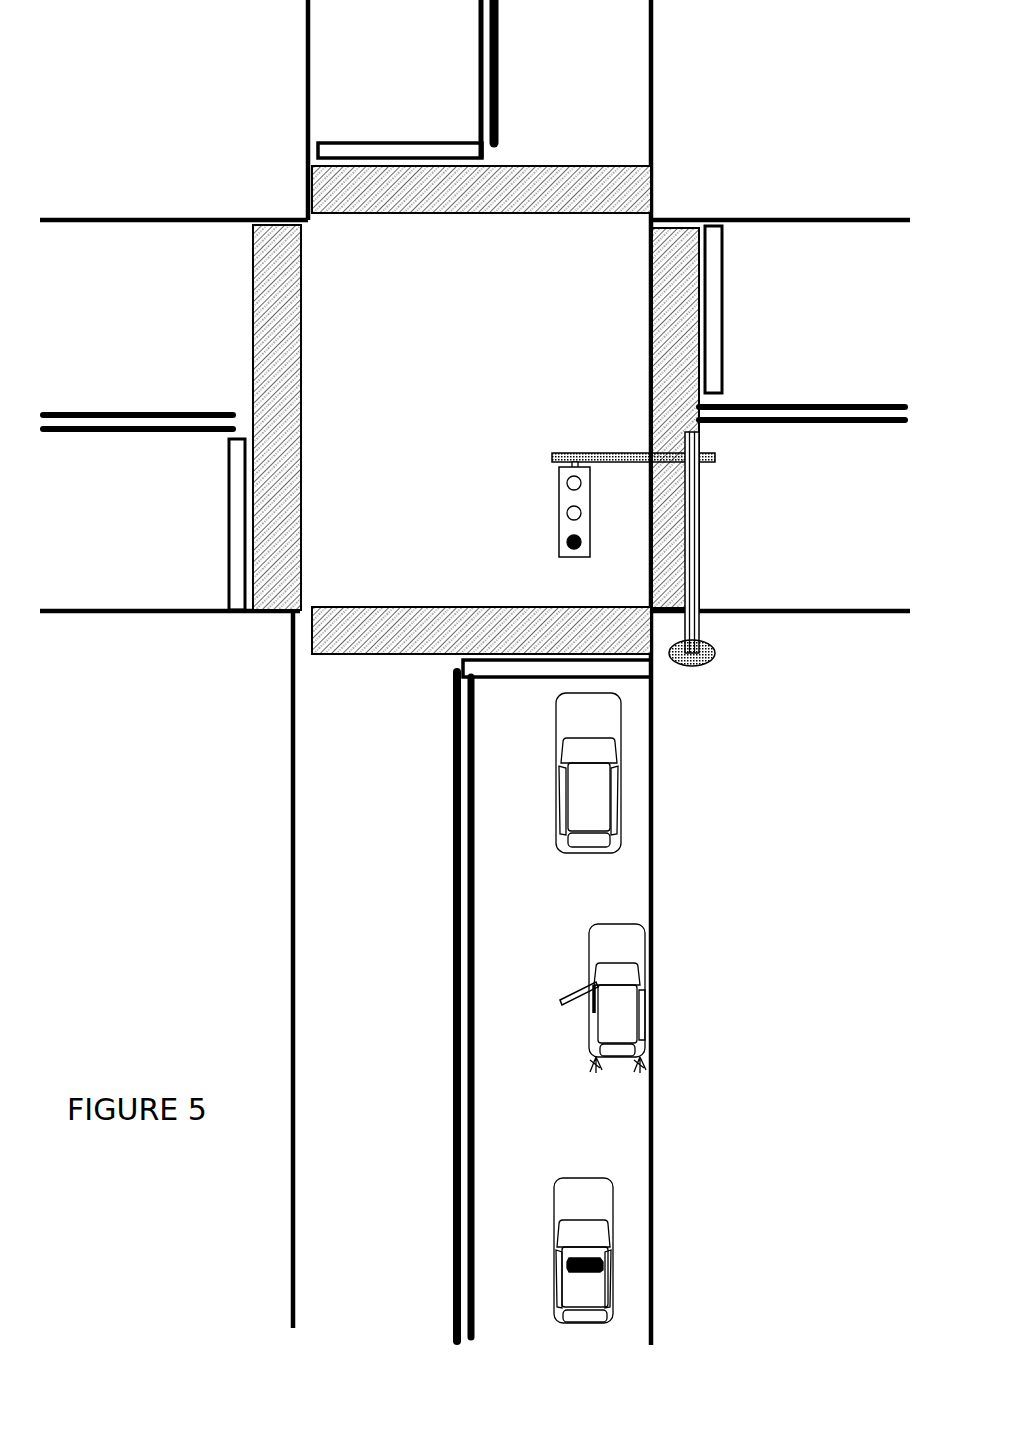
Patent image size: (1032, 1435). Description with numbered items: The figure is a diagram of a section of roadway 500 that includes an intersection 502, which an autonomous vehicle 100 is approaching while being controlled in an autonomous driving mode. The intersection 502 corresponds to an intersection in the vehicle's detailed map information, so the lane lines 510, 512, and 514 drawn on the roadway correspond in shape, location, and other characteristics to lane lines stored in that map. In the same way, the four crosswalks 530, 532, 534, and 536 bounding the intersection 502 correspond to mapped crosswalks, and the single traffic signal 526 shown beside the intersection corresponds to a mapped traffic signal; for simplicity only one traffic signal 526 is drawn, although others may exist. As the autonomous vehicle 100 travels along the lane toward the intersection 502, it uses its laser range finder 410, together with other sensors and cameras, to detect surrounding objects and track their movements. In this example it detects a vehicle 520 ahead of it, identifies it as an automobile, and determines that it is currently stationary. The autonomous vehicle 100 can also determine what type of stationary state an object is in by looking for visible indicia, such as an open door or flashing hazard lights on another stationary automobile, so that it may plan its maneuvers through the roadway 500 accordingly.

The autonomous vehicle 100 is at (597, 1293).
The laser range finder 410 is at (598, 1252).
The section of roadway 500 is at (636, 1153).
The intersection 502 is at (325, 560).
The lane line 510 is at (456, 828).
The lane line 512 is at (868, 425).
The lane line 514 is at (478, 48).
The vehicle 520 is at (600, 788).
The traffic signal 526 is at (570, 455).
The crosswalk 530 is at (355, 655).
The crosswalk 532 is at (683, 245).
The crosswalk 534 is at (610, 170).
The crosswalk 536 is at (278, 250).